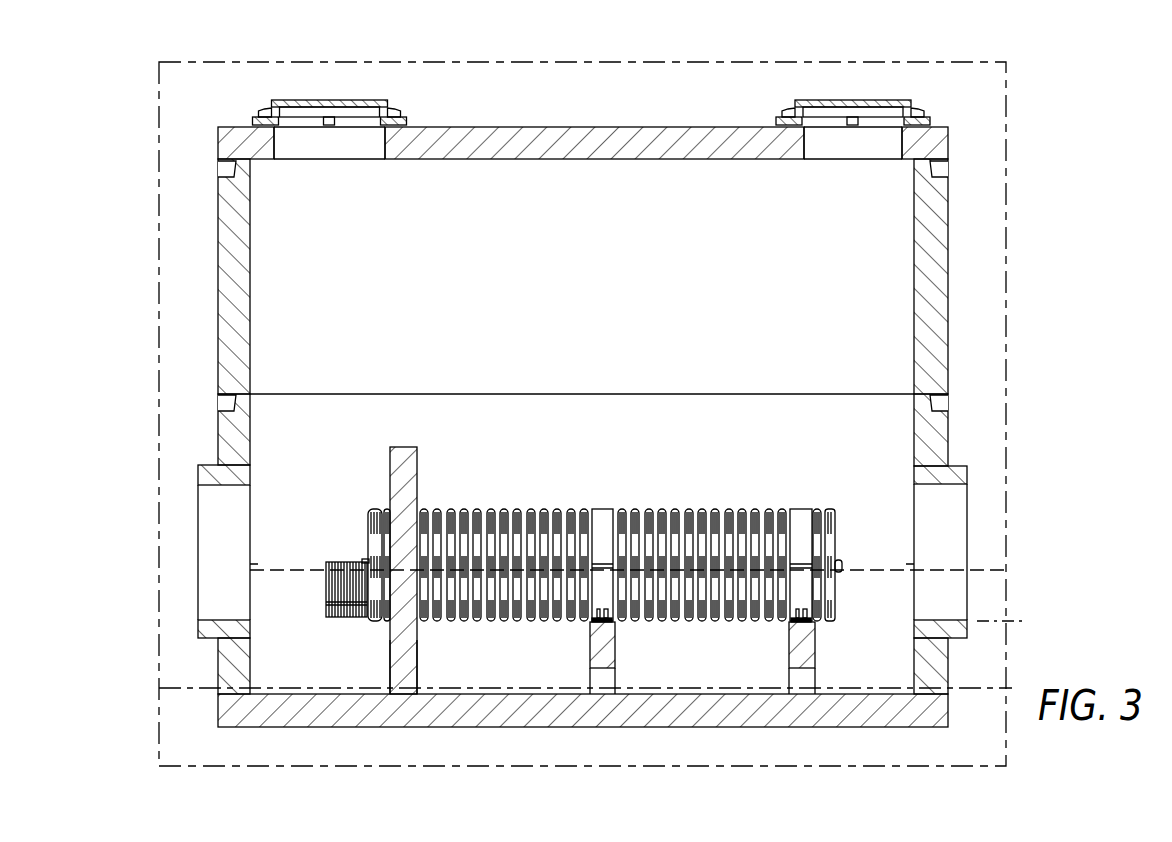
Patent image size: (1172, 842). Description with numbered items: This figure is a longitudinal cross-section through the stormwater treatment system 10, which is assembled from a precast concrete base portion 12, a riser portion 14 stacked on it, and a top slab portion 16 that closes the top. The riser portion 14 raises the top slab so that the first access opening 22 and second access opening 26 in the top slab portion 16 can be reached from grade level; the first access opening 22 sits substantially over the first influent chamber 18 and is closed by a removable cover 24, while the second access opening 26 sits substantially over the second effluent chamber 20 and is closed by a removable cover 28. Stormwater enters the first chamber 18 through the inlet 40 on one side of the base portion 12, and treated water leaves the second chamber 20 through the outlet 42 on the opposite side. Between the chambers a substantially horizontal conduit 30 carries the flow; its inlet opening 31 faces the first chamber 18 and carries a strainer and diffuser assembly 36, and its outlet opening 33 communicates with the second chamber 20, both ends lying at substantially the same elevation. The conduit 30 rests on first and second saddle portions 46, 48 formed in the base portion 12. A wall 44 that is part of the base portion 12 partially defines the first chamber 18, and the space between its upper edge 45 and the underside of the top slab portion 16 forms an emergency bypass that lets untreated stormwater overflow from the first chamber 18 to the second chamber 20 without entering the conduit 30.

The stormwater treatment system 10 is at (1046, 104).
The base portion 12 is at (223, 438).
The riser portion 14 is at (233, 253).
The top slab portion 16 is at (580, 127).
The first influent chamber 18 is at (267, 593).
The second effluent chamber 20 is at (872, 620).
The first access opening 22 is at (383, 142).
The removable cover 24 is at (336, 100).
The second access opening 26 is at (805, 147).
The removable cover 28 is at (845, 100).
The conduit 30 is at (483, 622).
The inlet opening 31 is at (367, 613).
The outlet opening 33 is at (837, 603).
The strainer and diffuser assembly 36 is at (327, 607).
The inlet 40 is at (218, 485).
The outlet 42 is at (942, 485).
The wall 44 is at (398, 658).
The upper edge 45 is at (404, 447).
The first saddle portion 46 is at (612, 652).
The second saddle portion 48 is at (808, 655).